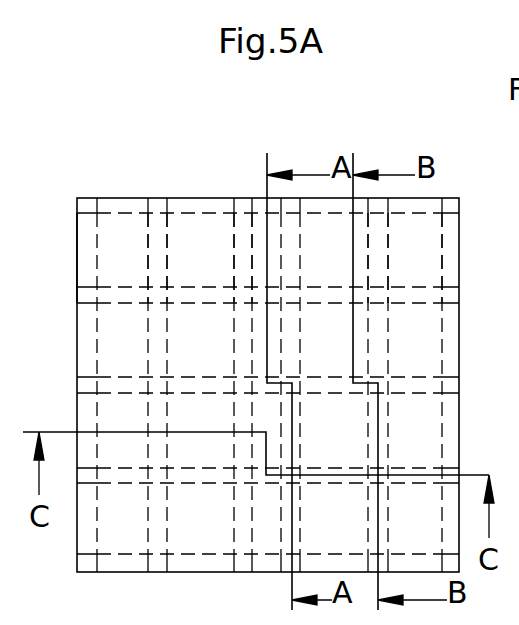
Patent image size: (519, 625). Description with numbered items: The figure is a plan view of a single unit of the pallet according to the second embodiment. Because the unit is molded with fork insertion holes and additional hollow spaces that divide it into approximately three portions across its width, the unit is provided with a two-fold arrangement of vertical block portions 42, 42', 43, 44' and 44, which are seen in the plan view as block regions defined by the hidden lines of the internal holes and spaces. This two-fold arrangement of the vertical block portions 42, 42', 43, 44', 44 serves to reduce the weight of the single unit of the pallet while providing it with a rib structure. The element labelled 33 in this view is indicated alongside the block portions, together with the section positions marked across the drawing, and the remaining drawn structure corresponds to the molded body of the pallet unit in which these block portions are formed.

The substrate block 33 is at (417, 302).
The vertical block portion 42 is at (48, 258).
The vertical block portion 42' is at (167, 221).
The vertical block portion 43 is at (245, 205).
The vertical block portion 44 is at (473, 236).
The vertical block portion 44' is at (440, 258).